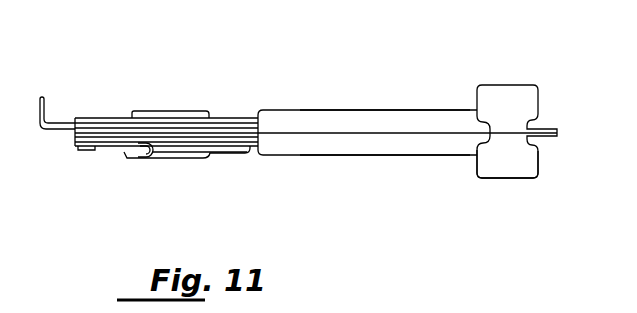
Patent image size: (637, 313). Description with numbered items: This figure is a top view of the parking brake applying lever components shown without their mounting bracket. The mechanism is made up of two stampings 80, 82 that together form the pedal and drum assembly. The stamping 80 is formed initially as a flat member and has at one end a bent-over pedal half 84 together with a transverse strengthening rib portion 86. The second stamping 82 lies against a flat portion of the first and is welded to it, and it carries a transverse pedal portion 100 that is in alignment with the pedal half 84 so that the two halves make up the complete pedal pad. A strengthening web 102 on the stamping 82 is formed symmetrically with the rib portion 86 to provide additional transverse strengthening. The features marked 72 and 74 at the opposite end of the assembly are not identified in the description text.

The clip 72 is at (93, 150).
The spring contact stack 74 is at (95, 123).
The stamping 80 is at (396, 110).
The stamping 82 is at (402, 155).
The bent-over pedal half 84 is at (500, 92).
The transverse strengthening rib portion 86 is at (297, 122).
The transverse pedal portion 100 is at (510, 168).
The strengthening web 102 is at (283, 147).